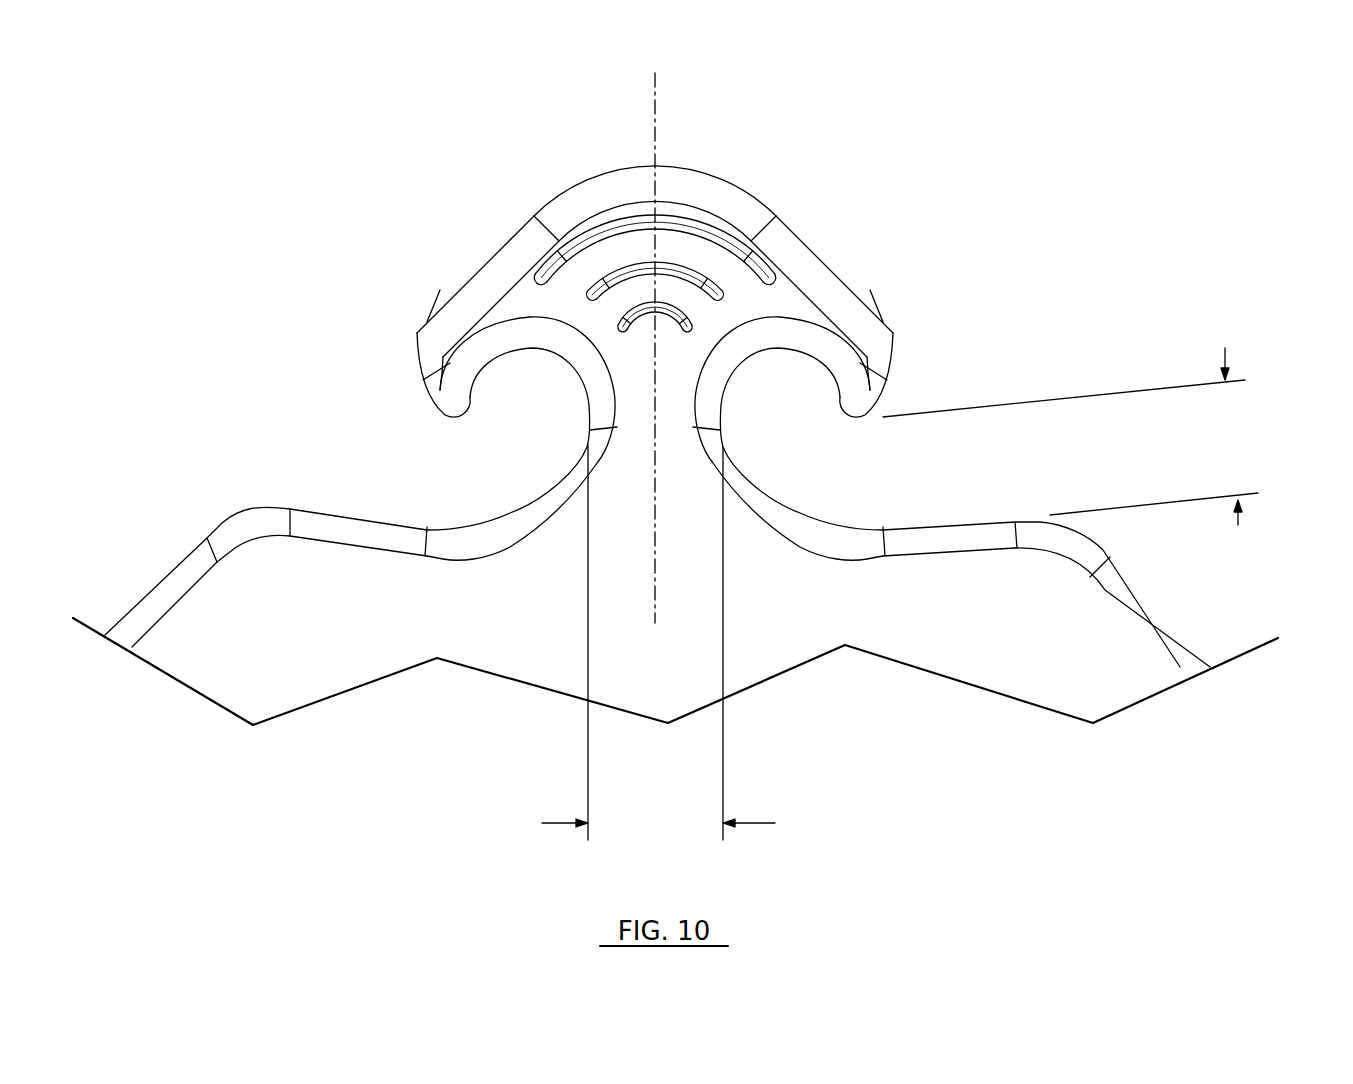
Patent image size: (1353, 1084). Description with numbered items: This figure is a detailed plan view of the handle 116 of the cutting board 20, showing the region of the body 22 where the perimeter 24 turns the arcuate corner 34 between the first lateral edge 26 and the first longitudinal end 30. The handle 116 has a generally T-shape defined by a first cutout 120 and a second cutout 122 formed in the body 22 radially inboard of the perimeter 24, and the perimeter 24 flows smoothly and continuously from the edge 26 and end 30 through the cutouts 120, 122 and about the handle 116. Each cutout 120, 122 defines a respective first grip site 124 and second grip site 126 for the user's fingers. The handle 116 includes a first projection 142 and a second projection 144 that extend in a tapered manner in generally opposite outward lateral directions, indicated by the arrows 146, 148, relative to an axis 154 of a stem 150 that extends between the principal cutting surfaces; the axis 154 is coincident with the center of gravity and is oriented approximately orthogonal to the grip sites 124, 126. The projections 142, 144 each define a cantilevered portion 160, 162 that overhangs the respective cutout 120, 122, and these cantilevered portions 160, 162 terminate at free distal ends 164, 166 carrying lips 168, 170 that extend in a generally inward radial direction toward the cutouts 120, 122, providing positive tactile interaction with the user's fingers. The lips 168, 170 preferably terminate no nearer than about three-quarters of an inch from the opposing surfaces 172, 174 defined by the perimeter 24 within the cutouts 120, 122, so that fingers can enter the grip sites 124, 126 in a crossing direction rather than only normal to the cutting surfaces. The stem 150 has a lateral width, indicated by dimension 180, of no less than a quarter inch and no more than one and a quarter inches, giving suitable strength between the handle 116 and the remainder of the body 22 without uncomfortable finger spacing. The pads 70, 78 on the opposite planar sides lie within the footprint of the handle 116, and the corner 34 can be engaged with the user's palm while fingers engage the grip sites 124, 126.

The cutting board 20 is at (1093, 458).
The body 22 is at (675, 666).
The perimeter 24 is at (855, 296).
The first lateral edge 26 is at (1127, 577).
The first longitudinal end 30 is at (177, 562).
The arcuate shaped corner 34 is at (687, 167).
The pad 70 is at (680, 245).
The pad 78 is at (655, 283).
The handle 116 is at (663, 245).
The first cutout 120 is at (666, 497).
The second cutout 122 is at (396, 430).
The first grip site 124 is at (501, 438).
The second grip site 126 is at (788, 438).
The first projection 142 is at (482, 270).
The second projection 144 is at (795, 253).
The arrow 146 is at (630, 288).
The arrow 148 is at (717, 230).
The stem 150 is at (635, 457).
The axis 154 is at (652, 122).
The cantilevered portion 160 is at (462, 310).
The cantilevered portion 162 is at (907, 343).
The distal end 164 is at (407, 343).
The distal end 166 is at (887, 403).
The lip 168 is at (453, 413).
The lip 170 is at (840, 416).
The opposing surface 172 is at (478, 520).
The opposing surface 174 is at (850, 533).
The dimension 180 is at (755, 822).